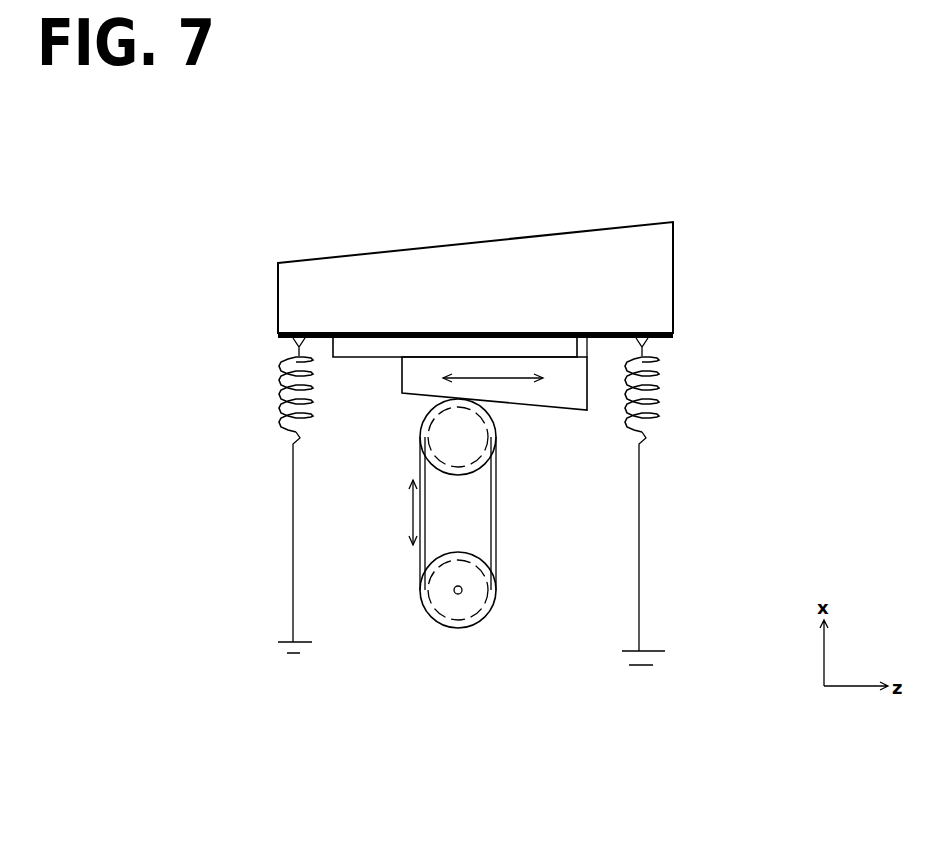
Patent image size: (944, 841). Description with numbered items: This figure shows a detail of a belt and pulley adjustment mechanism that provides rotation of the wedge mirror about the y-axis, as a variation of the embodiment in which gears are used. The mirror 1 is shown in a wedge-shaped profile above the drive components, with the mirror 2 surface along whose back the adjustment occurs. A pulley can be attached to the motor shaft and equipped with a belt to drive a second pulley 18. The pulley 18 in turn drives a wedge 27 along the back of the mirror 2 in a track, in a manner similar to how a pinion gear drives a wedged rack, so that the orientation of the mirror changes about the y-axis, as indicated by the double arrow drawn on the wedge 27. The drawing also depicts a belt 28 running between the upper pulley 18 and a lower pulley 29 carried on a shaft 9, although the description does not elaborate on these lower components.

The mirror 1 is at (278, 263).
The mirror 2 is at (665, 340).
The shaft 9 is at (461, 593).
The second pulley 18 is at (420, 437).
The wedge 27 is at (528, 412).
The belt 28 is at (496, 480).
The lower roller 29 is at (437, 626).